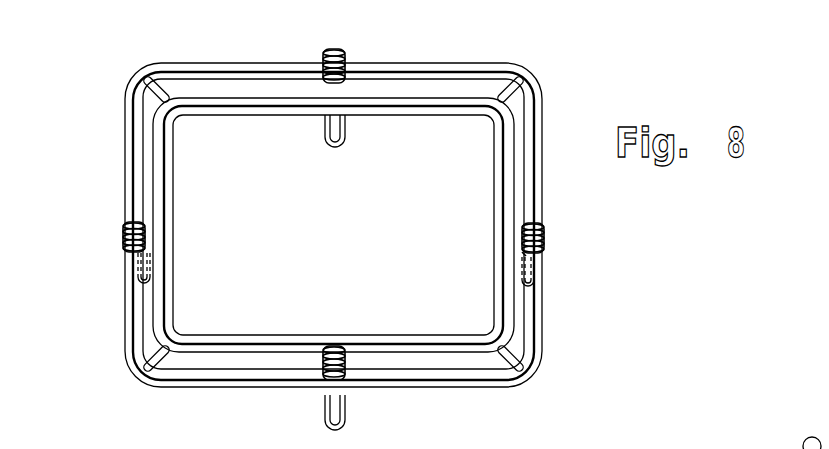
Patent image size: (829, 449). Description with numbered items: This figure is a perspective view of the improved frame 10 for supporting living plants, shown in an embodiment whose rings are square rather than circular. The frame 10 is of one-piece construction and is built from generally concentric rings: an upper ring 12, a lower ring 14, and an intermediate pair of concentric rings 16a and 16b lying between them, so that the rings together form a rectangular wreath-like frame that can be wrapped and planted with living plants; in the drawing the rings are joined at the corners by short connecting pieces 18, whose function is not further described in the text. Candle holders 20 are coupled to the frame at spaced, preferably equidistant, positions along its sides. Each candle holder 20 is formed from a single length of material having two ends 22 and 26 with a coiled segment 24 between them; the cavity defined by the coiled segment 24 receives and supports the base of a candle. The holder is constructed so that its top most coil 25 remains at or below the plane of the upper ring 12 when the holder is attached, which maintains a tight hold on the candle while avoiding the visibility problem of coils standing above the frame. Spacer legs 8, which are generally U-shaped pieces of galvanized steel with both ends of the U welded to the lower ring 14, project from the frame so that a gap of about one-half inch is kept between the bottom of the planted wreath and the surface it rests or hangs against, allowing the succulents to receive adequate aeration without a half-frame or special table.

The spacer leg 8 is at (343, 148).
The frame 10 is at (464, 57).
The upper ring 12 is at (420, 62).
The lower ring 14 is at (437, 118).
The intermediate ring 16a is at (176, 182).
The intermediate ring 16b is at (127, 158).
The corner brace 18 is at (166, 70).
The candle holder 20 is at (333, 49).
The end 22 is at (530, 214).
The coiled segment 24 is at (548, 240).
The top most coil 25 is at (543, 231).
The end 26 is at (522, 251).